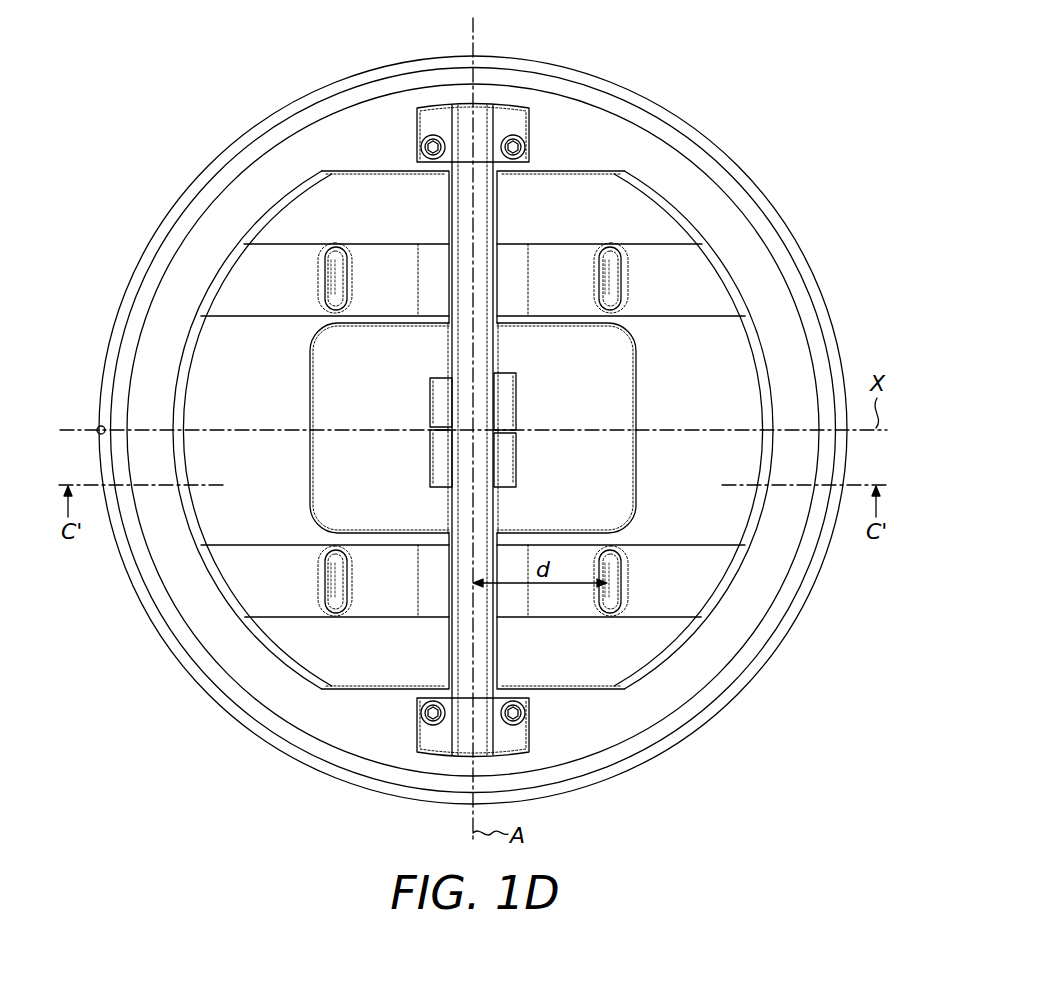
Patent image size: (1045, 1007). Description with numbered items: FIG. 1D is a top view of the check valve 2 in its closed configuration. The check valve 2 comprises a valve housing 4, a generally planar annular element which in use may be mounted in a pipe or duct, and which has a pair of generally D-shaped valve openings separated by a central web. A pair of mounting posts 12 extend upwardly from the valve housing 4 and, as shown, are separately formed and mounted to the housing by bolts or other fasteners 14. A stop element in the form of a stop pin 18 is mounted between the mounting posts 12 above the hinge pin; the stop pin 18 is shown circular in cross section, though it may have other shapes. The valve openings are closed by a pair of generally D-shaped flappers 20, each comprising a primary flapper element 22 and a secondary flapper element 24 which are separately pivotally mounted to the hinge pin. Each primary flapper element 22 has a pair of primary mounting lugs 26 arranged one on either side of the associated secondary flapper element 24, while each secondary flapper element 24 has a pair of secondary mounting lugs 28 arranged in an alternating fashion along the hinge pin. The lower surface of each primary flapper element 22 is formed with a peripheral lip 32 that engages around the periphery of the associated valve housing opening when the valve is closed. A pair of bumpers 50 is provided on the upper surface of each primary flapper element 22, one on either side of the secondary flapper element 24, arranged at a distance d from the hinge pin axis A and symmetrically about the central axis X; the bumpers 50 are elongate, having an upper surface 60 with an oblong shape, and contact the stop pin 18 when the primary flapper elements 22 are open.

The check valve 2 is at (473, 402).
The valve housing 4 is at (794, 232).
The mounting posts 12 is at (476, 432).
The fasteners 14 is at (421, 147).
The stop pin 18 is at (490, 275).
The flappers 20 is at (448, 377).
The primary flapper element 22 is at (250, 399).
The secondary flapper element 24 is at (386, 374).
The primary mounting lugs 26 is at (433, 253).
The secondary mounting lugs 28 is at (438, 488).
The peripheral lip 32 is at (220, 274).
The bumpers 50 is at (333, 278).
The upper surface 60 is at (332, 304).